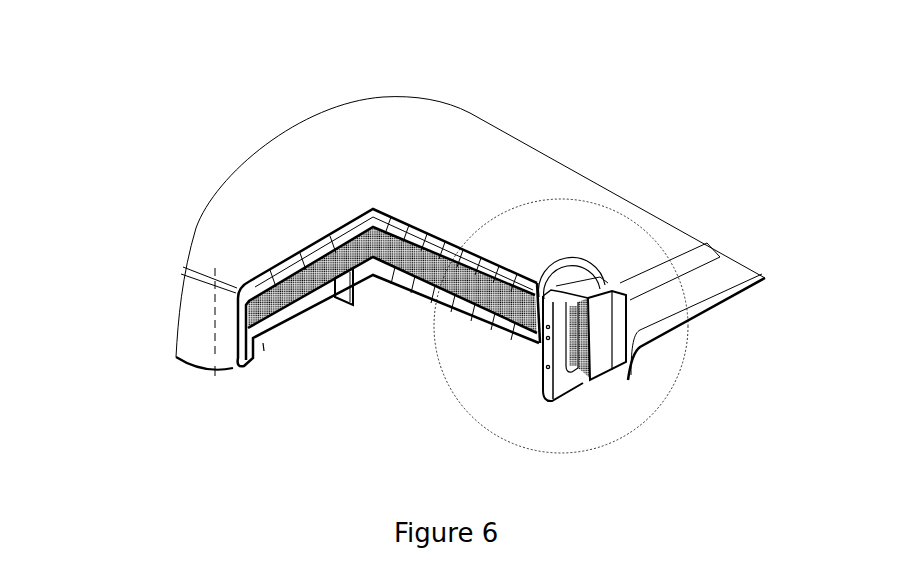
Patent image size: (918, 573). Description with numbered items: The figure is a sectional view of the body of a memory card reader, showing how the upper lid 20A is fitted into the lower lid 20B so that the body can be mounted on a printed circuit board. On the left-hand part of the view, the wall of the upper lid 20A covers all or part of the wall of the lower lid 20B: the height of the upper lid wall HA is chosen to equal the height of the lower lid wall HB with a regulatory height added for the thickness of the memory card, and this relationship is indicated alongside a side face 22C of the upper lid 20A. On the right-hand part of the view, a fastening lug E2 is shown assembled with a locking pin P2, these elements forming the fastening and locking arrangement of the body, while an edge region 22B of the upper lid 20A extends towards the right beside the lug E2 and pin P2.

The upper lid 20A is at (393, 140).
The side face of panel 22C is at (191, 323).
The height of the wall of the upper lid HA is at (203, 359).
The height of the wall of the lower lid HB is at (262, 347).
The lower lid 20B is at (303, 309).
The locking pin P2 is at (529, 386).
The fastening lug E2 is at (605, 374).
The wing edge 22B is at (696, 302).